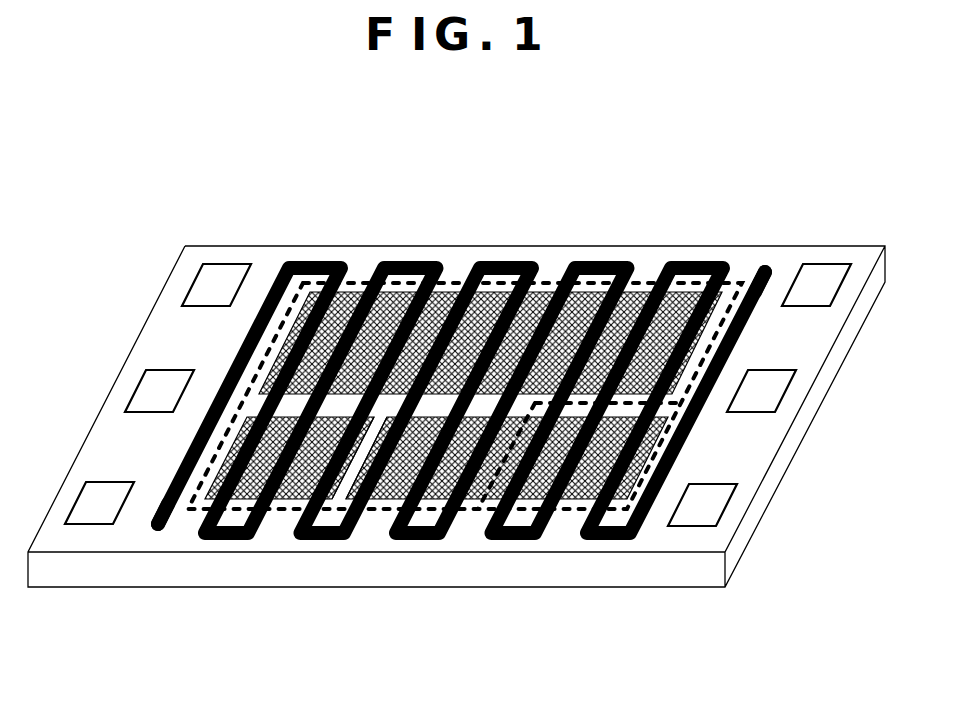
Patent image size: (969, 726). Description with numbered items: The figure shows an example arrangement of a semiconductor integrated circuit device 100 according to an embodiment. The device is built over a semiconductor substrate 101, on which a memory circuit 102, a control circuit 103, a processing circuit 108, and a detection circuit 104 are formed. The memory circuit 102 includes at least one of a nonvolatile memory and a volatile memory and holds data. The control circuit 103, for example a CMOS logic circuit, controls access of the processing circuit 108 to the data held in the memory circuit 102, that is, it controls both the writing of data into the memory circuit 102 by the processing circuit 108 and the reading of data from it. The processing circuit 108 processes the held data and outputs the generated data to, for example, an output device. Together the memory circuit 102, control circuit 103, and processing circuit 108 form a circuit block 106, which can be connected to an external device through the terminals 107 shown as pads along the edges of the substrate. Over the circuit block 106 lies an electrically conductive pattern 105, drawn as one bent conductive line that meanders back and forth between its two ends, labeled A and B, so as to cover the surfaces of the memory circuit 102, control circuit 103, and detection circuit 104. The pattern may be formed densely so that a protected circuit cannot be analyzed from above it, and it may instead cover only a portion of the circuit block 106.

The semiconductor integrated circuit device 100 is at (197, 155).
The semiconductor substrate 101 is at (465, 247).
The memory circuit 102 is at (353, 283).
The control circuit 103 is at (285, 507).
The detection circuit 104 is at (568, 503).
The electrically conductive pattern 105 is at (687, 438).
The circuit block 106 is at (472, 513).
The terminals 107 is at (820, 267).
The processing circuit 108 is at (382, 505).
The electrode end A is at (763, 268).
The electrode end B is at (160, 535).